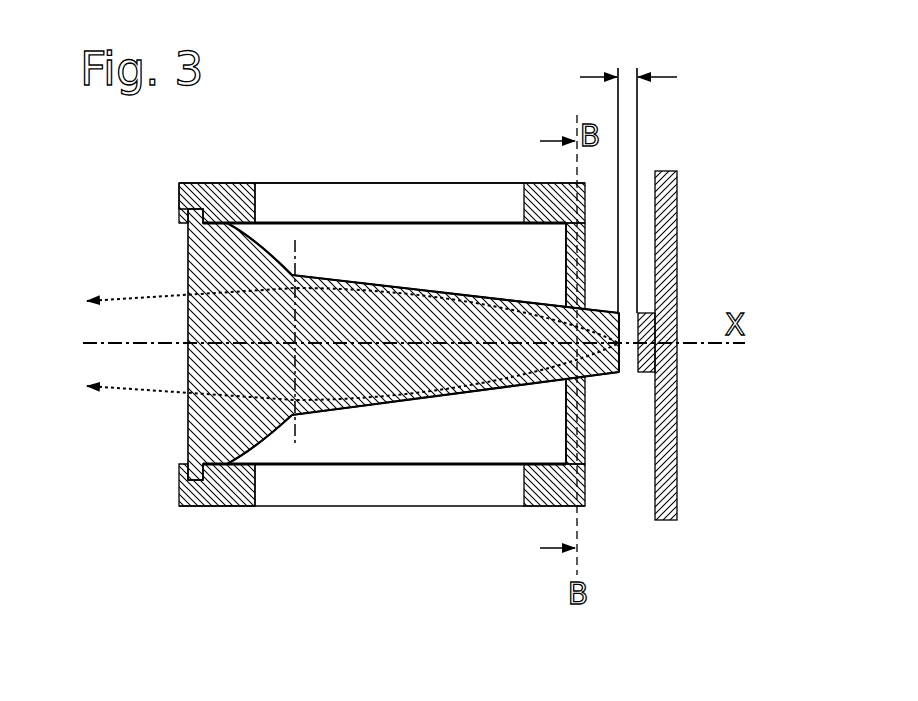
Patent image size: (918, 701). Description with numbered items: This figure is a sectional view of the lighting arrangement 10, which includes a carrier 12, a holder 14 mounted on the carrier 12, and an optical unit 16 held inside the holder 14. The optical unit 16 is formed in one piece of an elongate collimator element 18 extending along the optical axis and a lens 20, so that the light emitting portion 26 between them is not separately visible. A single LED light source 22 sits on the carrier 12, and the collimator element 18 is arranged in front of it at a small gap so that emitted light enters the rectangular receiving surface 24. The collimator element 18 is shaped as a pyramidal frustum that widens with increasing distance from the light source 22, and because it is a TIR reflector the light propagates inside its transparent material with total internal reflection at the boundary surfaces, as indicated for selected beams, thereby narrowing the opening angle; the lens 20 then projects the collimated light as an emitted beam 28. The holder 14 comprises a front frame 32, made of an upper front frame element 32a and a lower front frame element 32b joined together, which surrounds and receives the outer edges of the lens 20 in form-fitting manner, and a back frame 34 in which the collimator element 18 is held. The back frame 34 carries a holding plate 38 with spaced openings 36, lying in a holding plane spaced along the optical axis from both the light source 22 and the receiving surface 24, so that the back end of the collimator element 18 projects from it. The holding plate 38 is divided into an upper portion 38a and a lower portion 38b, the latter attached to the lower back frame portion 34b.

The lighting arrangement 10 is at (703, 77).
The carrier 12 is at (672, 200).
The holder 14 is at (294, 133).
The optical unit 16 is at (318, 237).
The collimator element 18 is at (393, 290).
The lens 20 is at (265, 456).
The light source 22 is at (645, 374).
The receiving surface 24 is at (620, 374).
The light emitting portion 26 is at (297, 437).
The emitted beam 28 is at (62, 359).
The front frame 32 is at (212, 177).
The upper front frame element 32a is at (179, 186).
The lower front frame element 32b is at (179, 498).
The back frame 34 is at (351, 350).
The lower back frame portion 34b is at (527, 508).
The opening 36 is at (590, 382).
The holding plate 38 is at (560, 443).
The upper portion of the holding plate 38a is at (566, 243).
The lower portion of the holding plate 38b is at (566, 416).